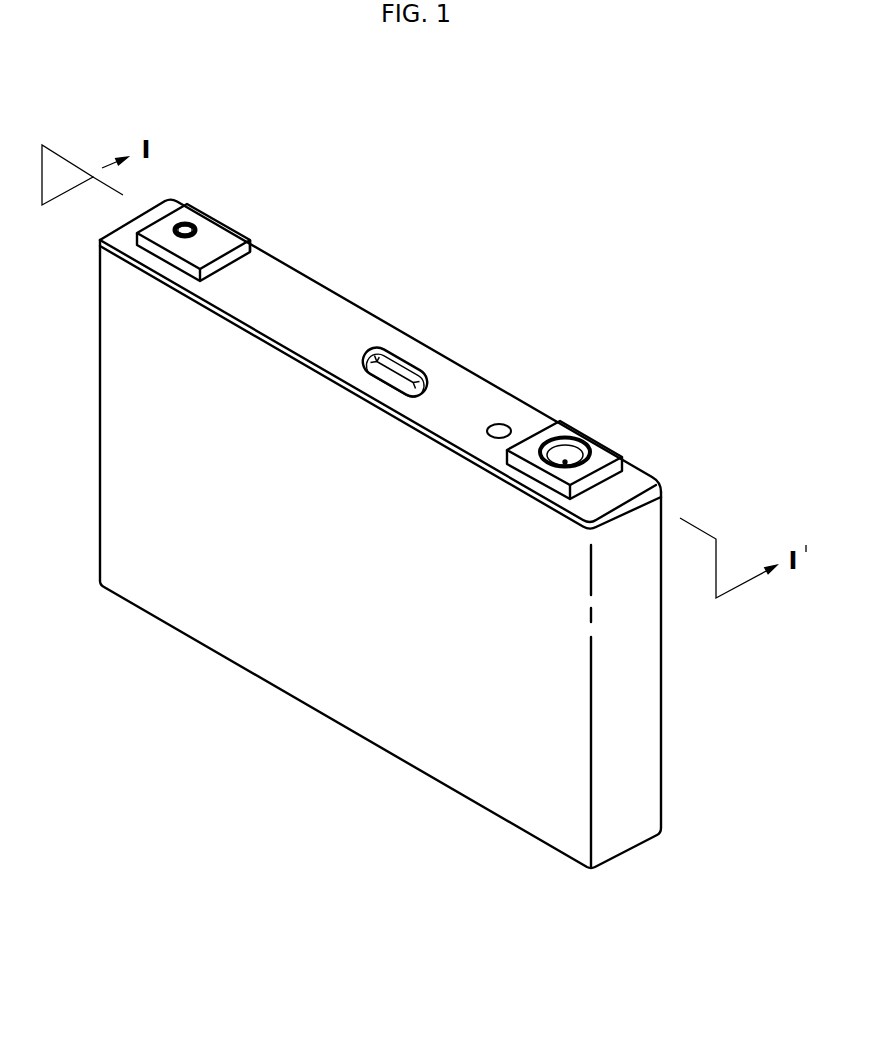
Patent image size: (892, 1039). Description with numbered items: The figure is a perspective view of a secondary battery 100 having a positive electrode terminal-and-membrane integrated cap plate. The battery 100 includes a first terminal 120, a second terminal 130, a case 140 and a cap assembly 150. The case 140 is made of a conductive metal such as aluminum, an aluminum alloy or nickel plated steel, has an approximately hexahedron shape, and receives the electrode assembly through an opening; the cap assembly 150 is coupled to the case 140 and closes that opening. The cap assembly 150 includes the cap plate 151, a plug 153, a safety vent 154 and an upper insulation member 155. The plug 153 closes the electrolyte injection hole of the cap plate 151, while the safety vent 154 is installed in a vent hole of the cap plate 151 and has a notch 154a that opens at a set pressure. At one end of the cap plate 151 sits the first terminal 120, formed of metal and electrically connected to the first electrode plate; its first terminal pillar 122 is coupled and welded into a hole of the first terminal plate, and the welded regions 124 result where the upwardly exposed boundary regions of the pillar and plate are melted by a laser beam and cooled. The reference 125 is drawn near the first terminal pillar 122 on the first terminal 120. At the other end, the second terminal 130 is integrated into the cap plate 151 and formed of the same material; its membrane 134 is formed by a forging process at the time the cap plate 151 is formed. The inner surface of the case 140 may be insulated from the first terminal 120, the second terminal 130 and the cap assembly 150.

The secondary battery 100 is at (718, 108).
The first terminal 120 is at (175, 123).
The first terminal pillar 122 is at (183, 223).
The welded regions 124 is at (216, 236).
The terminal pillar 125 is at (198, 228).
The second terminal 130 is at (620, 440).
The membrane 134 is at (564, 447).
The case 140 is at (320, 705).
The cap assembly 150 is at (358, 296).
The cap plate 151 is at (312, 290).
The plug 153 is at (497, 424).
The safety vent 154 is at (393, 353).
The notch 154a is at (401, 375).
The upper insulation member 155 is at (260, 254).